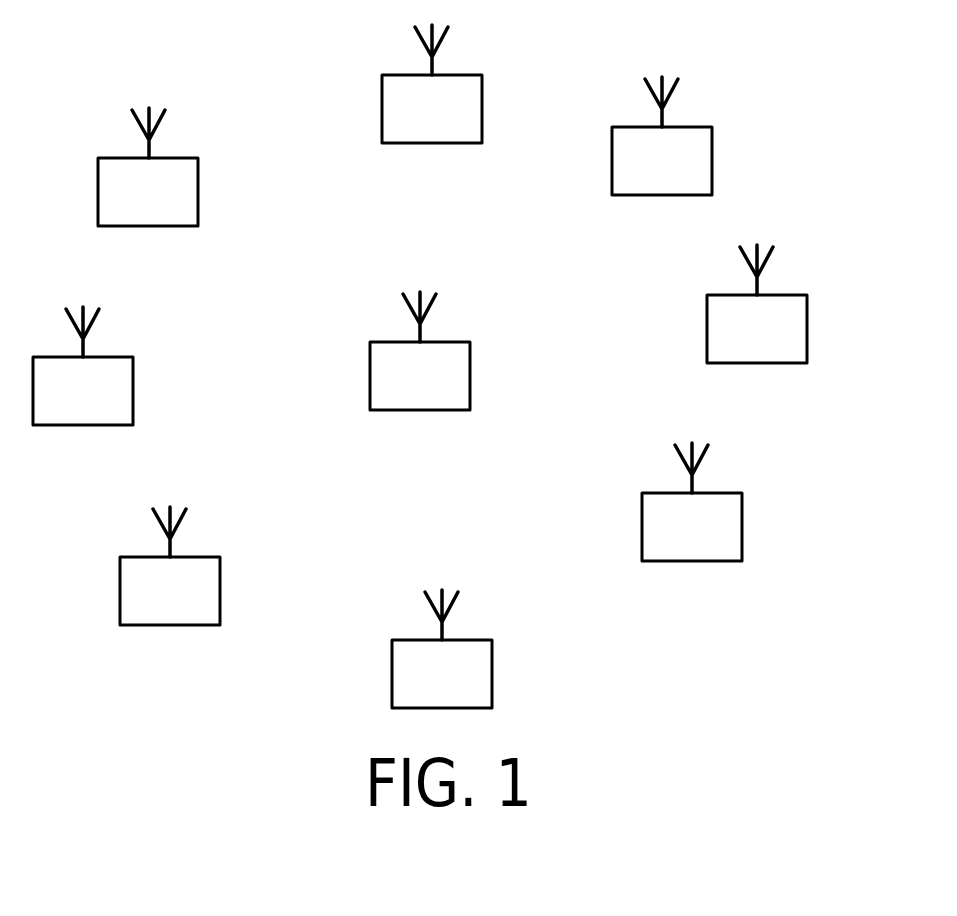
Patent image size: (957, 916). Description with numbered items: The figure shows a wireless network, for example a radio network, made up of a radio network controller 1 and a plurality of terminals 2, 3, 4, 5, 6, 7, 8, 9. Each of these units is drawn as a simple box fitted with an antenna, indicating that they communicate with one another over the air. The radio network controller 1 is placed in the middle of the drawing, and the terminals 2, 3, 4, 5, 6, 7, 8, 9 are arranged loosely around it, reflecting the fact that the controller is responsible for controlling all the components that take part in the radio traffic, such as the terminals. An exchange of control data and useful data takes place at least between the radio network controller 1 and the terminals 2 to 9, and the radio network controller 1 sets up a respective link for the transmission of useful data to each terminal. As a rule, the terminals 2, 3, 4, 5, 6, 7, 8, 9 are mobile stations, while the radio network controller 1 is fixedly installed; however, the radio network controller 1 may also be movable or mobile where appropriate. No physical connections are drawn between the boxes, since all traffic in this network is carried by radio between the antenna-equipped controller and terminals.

The radio network controller 1 is at (453, 360).
The terminal 2 is at (465, 92).
The terminal 3 is at (695, 143).
The terminal 4 is at (790, 312).
The terminal 5 is at (725, 512).
The terminal 6 is at (475, 658).
The terminal 7 is at (203, 573).
The terminal 8 is at (117, 375).
The terminal 9 is at (182, 175).